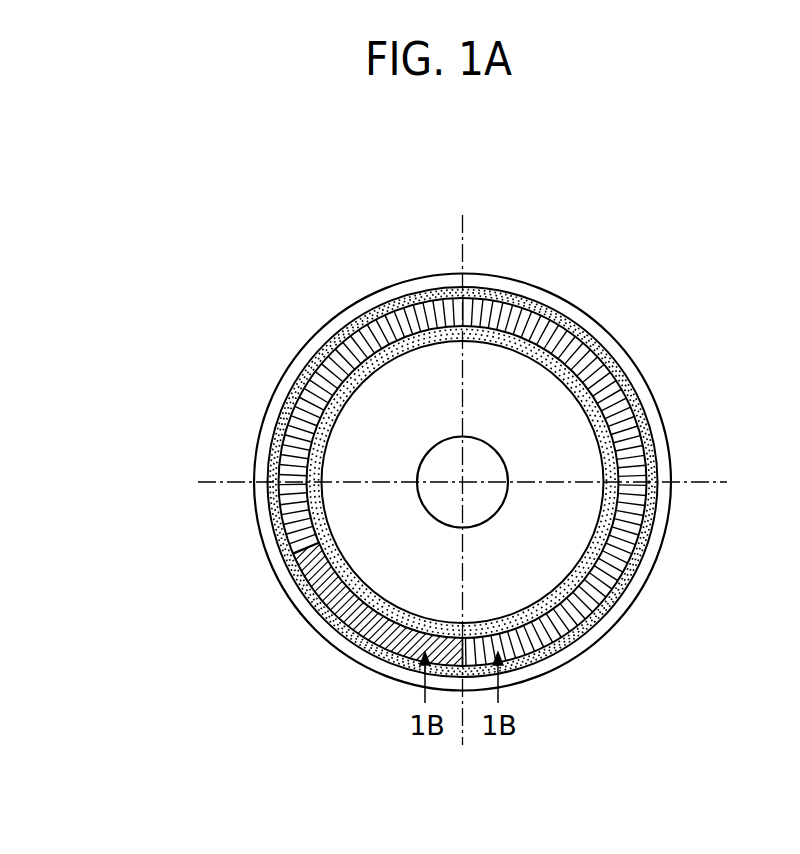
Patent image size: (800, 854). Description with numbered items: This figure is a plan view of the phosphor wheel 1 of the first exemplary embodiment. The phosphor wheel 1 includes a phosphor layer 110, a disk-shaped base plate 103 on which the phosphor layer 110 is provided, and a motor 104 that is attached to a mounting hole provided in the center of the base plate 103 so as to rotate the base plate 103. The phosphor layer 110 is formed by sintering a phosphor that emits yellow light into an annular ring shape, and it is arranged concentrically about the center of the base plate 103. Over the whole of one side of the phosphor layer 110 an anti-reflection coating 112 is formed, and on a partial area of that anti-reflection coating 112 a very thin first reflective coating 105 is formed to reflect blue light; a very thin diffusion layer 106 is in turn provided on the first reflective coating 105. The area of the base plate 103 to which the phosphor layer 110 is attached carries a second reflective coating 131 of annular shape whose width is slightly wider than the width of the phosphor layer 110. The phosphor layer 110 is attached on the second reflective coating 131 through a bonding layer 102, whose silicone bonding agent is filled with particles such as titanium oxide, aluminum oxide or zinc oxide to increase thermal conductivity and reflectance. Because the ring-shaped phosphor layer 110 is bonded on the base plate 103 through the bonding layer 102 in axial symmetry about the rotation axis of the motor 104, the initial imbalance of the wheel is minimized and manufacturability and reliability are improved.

The phosphor wheel 1 is at (540, 226).
The base plate 103 is at (393, 415).
The motor 104 is at (447, 464).
The anti-reflection coating 112 is at (487, 459).
The phosphor layer 110 is at (583, 365).
The bonding layer 102 is at (263, 610).
The second reflective coating 131 is at (327, 612).
The diffusion layer 106 is at (360, 505).
The first reflective coating 105 is at (375, 643).